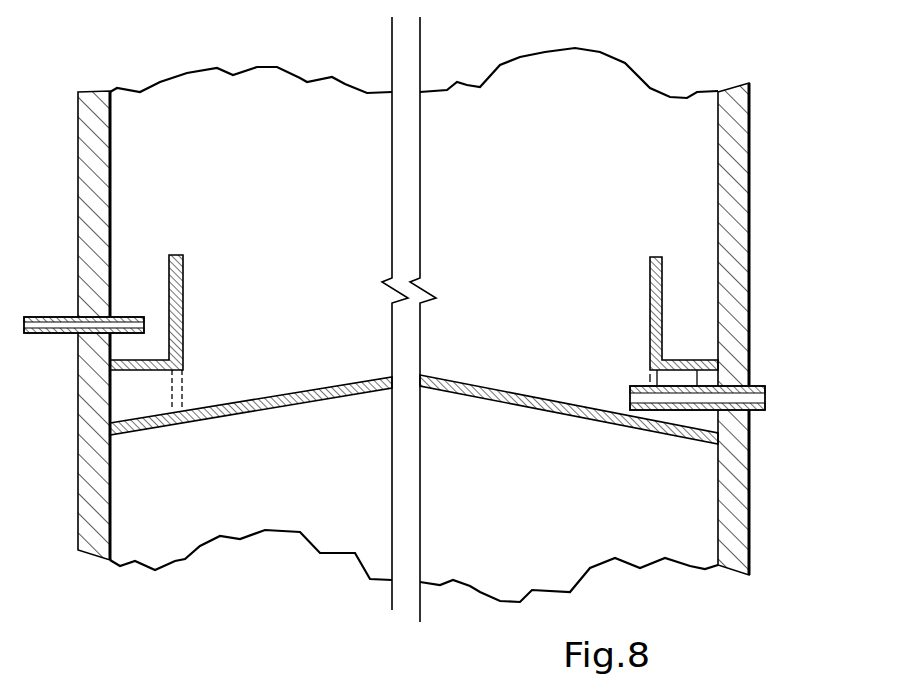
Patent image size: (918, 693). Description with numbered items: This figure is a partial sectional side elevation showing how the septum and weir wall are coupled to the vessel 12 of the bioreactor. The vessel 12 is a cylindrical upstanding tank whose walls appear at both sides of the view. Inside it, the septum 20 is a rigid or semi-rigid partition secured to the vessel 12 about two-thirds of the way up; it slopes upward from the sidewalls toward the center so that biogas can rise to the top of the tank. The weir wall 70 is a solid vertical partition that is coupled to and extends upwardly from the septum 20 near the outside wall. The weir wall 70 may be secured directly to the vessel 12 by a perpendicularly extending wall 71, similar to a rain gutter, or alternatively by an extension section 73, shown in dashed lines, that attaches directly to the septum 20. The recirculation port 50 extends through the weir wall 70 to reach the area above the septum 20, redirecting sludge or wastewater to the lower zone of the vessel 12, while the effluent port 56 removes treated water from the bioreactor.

The vessel 12 is at (100, 208).
The septum 20 is at (232, 406).
The recirculation port 50 is at (761, 386).
The effluent port 56 is at (53, 317).
The weir wall 70 is at (186, 279).
The perpendicularly extending wall 71 is at (137, 373).
The extension section 73 is at (184, 383).